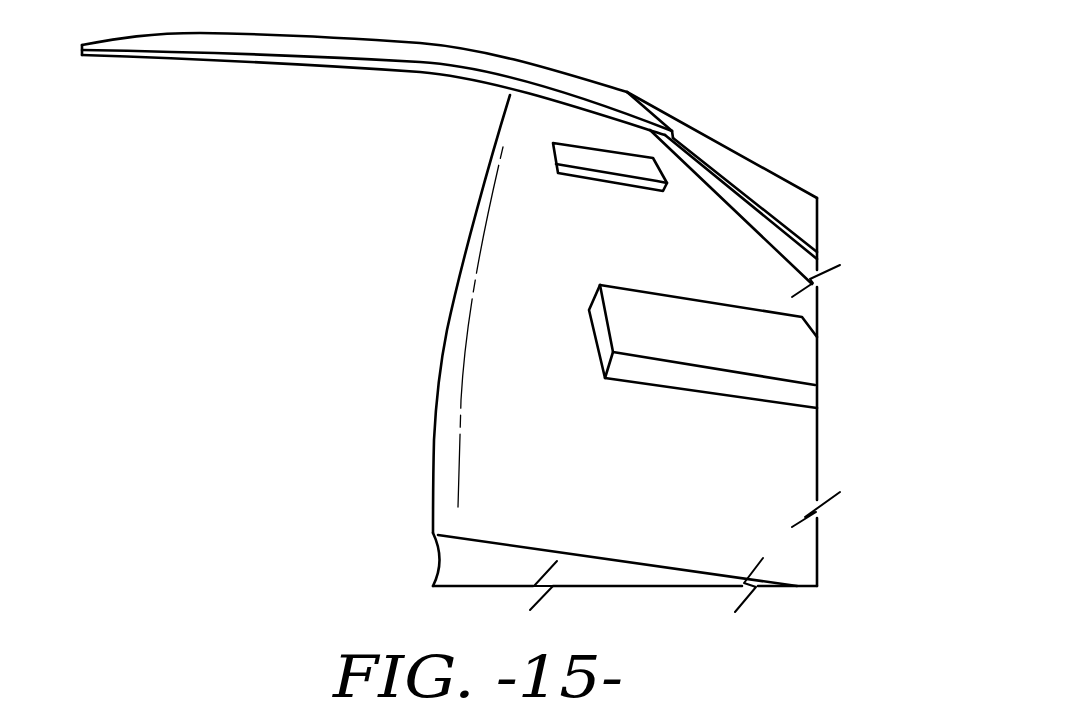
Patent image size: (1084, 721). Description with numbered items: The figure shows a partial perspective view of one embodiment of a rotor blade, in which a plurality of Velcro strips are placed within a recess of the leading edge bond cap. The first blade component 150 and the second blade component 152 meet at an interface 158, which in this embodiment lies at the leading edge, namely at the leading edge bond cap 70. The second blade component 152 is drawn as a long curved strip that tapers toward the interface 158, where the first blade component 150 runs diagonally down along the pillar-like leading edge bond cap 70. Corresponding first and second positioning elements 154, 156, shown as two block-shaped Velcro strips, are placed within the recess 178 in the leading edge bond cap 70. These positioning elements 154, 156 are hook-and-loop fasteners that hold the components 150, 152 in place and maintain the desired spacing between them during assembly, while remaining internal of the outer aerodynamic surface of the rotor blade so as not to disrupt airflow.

The second blade component 152 is at (449, 61).
The interface 158 is at (645, 80).
The first blade component 150 is at (759, 188).
The leading edge bond cap 70 is at (740, 176).
The first positioning element 154 is at (572, 153).
The second positioning element 156 is at (432, 189).
The recess 178 is at (755, 460).